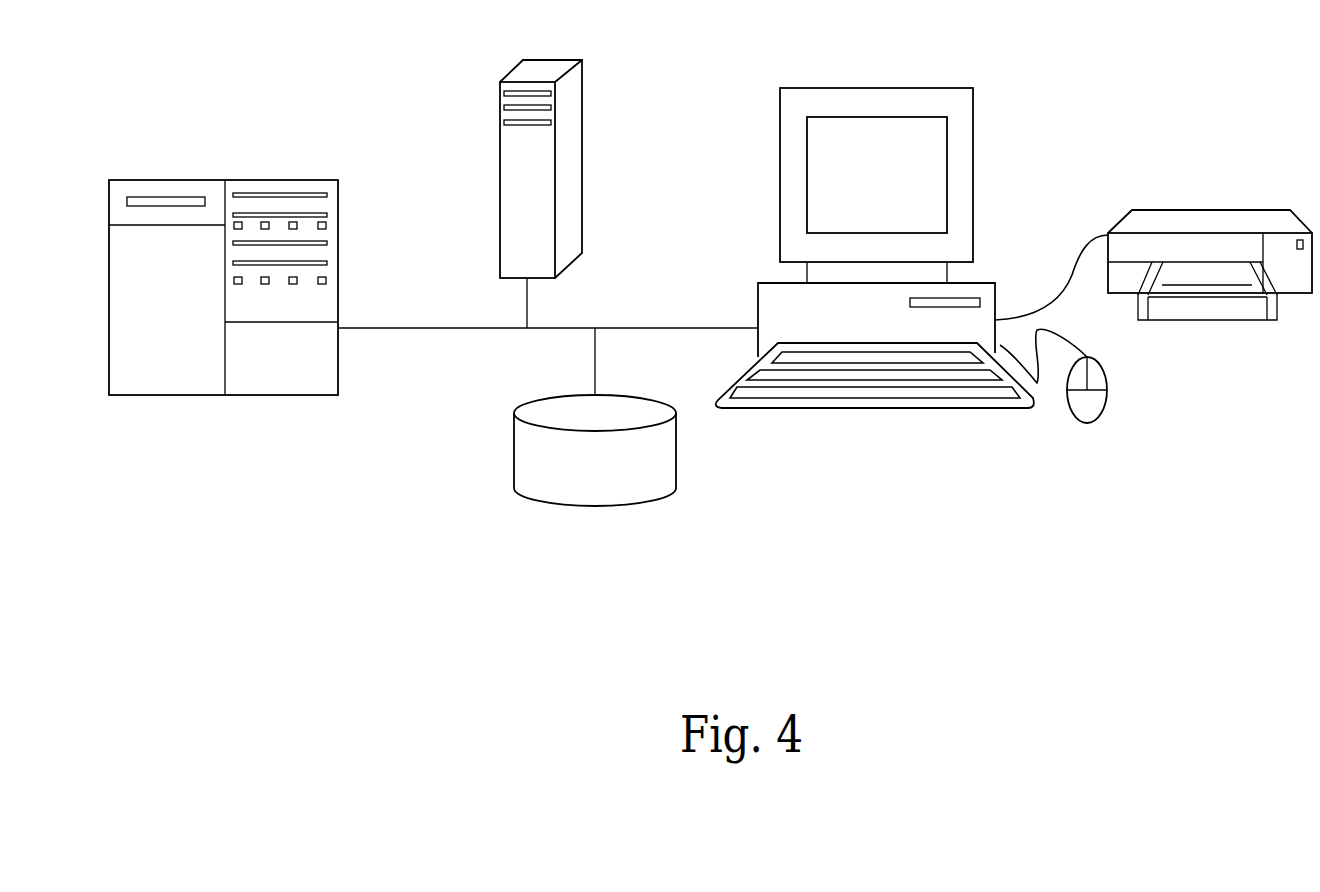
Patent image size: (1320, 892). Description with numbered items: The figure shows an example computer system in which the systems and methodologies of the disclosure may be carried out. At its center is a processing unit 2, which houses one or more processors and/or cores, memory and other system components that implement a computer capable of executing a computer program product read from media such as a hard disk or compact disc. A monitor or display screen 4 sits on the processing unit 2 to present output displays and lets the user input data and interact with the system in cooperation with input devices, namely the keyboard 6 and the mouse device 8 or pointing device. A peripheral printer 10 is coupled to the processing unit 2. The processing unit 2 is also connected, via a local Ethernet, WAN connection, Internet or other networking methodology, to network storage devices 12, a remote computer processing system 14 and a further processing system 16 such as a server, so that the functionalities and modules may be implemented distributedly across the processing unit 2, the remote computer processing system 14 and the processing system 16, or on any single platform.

The processing unit 2 is at (758, 308).
The monitor or display screen 4 is at (975, 168).
The keyboard 6 is at (938, 410).
The mouse device 8 is at (1107, 408).
The printer 10 is at (1208, 210).
The network storage devices 12 is at (610, 503).
The remote computer processing system 14 is at (582, 157).
The processing system 16 is at (270, 180).